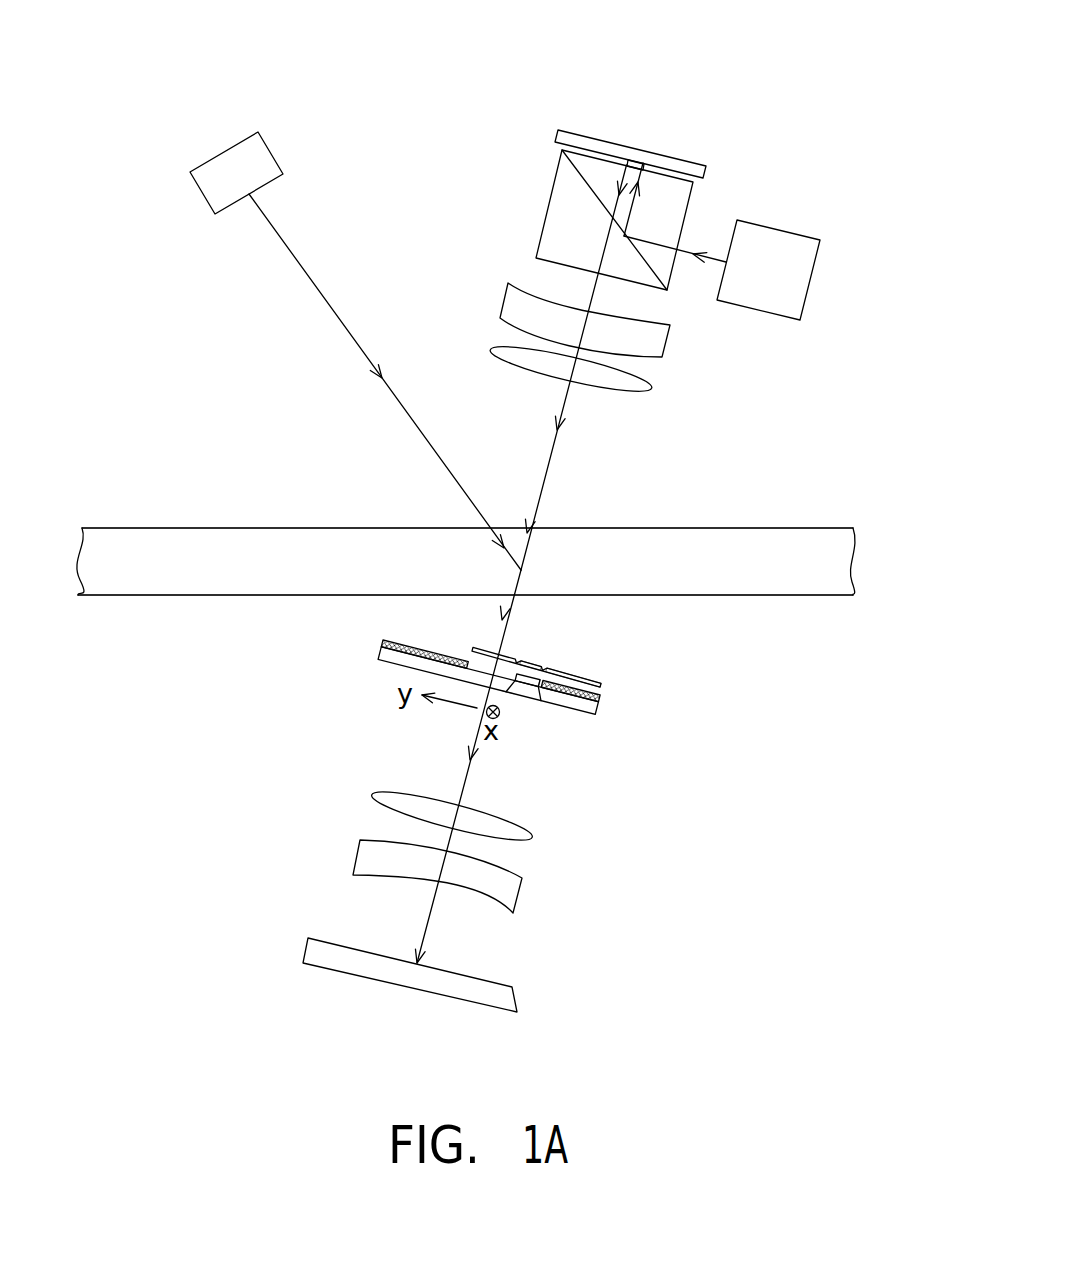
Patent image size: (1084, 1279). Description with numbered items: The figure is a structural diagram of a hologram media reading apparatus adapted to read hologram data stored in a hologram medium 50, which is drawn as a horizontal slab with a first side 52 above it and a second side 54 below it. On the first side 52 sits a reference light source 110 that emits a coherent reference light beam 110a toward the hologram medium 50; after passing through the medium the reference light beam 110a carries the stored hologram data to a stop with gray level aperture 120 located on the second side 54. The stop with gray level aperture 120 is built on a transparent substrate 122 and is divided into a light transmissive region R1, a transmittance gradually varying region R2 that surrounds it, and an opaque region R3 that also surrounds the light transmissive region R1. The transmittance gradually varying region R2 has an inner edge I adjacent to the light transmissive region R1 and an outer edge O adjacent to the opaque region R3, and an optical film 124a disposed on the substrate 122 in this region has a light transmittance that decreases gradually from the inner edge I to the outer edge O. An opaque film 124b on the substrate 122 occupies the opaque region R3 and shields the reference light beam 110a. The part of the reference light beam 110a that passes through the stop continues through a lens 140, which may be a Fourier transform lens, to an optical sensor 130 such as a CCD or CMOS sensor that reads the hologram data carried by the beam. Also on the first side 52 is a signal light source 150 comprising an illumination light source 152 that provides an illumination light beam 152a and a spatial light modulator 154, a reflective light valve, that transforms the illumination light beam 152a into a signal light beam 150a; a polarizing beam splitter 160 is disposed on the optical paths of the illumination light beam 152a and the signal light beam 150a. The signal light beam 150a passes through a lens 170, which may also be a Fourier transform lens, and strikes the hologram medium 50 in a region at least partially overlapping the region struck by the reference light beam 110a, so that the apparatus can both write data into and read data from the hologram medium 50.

The hologram medium 50 is at (835, 563).
The first side 52 is at (500, 494).
The second side 54 is at (499, 625).
The reference light source 110 is at (228, 160).
The reference light beam 110a is at (283, 243).
The stop with gray level aperture 120 is at (510, 691).
The substrate 122 is at (587, 705).
The optical film 124a is at (523, 683).
The opaque film 124b is at (387, 641).
The light transmissive region R1 is at (510, 658).
The transmittance gradually varying region R2 is at (548, 665).
The opaque region R3 is at (578, 670).
The inner edge I is at (508, 693).
The outer edge O is at (555, 733).
The optical sensor 130 is at (512, 1000).
The lens 140 is at (513, 893).
The signal light source 150 is at (783, 64).
The signal light beam 150a is at (543, 480).
The illumination light source 152 is at (780, 245).
The illumination light beam 152a is at (707, 260).
The spatial light modulator 154 is at (680, 163).
The polarizing beam splitter 160 is at (562, 197).
The lens 170 is at (632, 383).